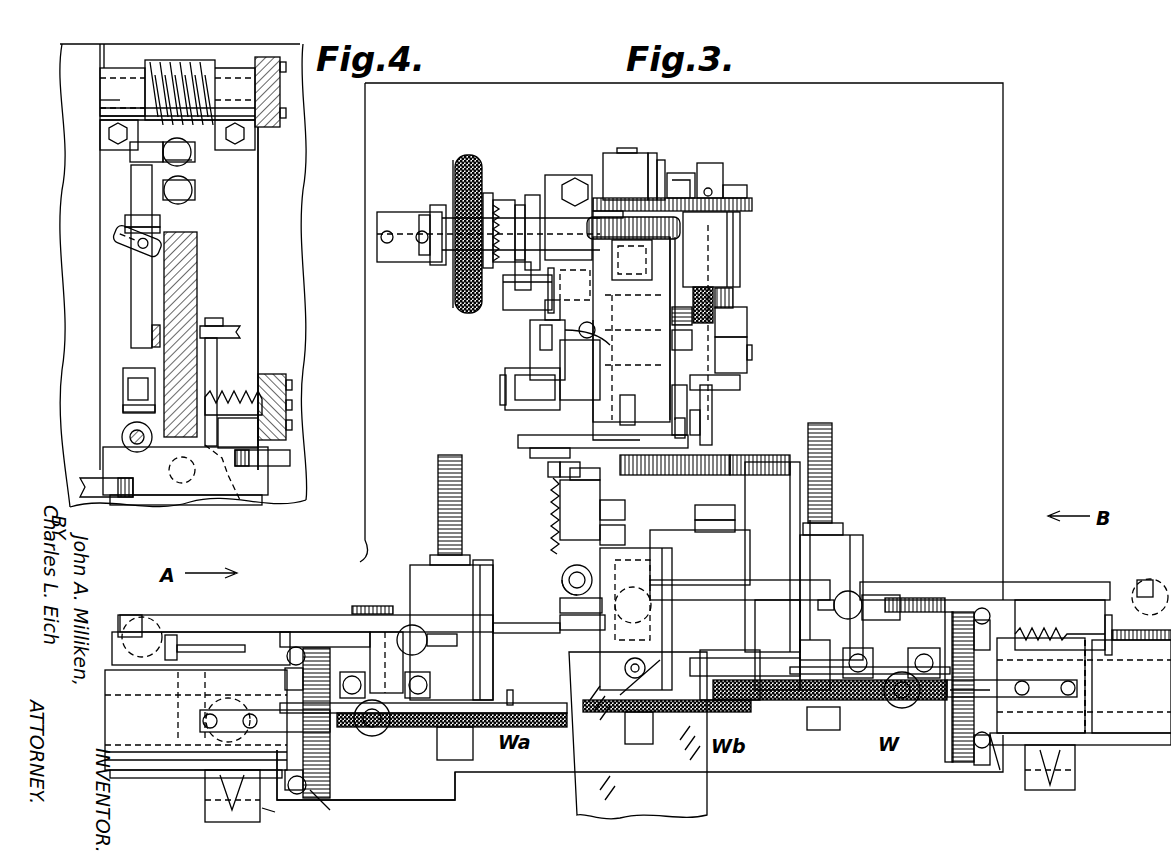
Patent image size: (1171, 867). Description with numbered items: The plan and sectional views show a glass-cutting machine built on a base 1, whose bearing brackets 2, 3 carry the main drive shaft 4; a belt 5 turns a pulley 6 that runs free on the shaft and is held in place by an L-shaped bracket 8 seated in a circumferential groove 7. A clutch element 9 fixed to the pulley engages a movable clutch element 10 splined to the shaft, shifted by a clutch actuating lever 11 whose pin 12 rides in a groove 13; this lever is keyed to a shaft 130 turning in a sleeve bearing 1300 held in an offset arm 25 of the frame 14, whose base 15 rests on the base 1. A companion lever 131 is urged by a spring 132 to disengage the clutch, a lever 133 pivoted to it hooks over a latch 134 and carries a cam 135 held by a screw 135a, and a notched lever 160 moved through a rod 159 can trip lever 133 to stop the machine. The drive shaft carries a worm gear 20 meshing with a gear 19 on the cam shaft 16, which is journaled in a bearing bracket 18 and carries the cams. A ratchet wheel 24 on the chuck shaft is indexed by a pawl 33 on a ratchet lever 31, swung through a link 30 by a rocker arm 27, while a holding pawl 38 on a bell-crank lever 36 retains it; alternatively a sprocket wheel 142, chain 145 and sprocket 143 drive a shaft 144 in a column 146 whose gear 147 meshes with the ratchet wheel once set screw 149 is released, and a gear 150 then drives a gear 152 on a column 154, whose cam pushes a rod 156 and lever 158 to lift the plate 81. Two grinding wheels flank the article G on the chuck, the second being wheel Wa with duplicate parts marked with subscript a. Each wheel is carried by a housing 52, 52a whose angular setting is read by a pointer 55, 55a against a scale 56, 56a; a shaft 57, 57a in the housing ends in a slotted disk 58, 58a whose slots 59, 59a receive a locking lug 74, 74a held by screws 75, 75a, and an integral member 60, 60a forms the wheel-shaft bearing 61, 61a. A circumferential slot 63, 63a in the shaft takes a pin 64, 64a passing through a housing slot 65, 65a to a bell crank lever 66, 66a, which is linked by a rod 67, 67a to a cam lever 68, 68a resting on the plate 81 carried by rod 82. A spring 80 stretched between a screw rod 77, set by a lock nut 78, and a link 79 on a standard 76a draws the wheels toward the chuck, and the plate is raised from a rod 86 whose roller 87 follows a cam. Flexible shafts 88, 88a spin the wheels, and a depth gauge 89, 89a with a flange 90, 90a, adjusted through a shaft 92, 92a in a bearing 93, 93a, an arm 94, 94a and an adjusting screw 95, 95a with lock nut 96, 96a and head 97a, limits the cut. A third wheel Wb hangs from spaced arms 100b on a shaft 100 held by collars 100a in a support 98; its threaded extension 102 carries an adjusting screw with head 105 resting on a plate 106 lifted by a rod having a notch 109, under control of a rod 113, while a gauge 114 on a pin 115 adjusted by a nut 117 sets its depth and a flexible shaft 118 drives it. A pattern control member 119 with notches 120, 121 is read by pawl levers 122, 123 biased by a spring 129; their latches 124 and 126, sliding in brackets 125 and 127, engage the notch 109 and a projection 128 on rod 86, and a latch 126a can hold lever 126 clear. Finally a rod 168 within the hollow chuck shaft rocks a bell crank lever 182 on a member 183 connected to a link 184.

In FIG. 3, the frame 1 is at (990, 100).
In FIG. 4, the nut 2 is at (118, 93).
In FIG. 3, the nut 2 is at (578, 175).
In FIG. 4, the bracket 3 is at (266, 122).
In FIG. 3, the bracket 3 is at (677, 173).
In FIG. 4, the bearing block 4 is at (100, 78).
In FIG. 3, the bearing block 4 is at (560, 175).
In FIG. 3, the grinding wheel 5 is at (466, 155).
In FIG. 3, the wheel face 6 is at (460, 295).
In FIG. 3, the flange 7 is at (440, 205).
In FIG. 3, the shaft support 8 is at (383, 212).
In FIG. 3, the collar 9 is at (490, 193).
In FIG. 3, the ratchet 10 is at (503, 198).
In FIG. 3, the plate 11 is at (540, 305).
In FIG. 3, the block 12 is at (512, 295).
In FIG. 3, the collar 13 is at (532, 195).
In FIG. 4, the plate 14 is at (190, 260).
In FIG. 4, the guide 15 is at (243, 268).
In FIG. 3, the housing 16 is at (625, 153).
In FIG. 3, the plate 18 is at (664, 175).
In FIG. 3, the worm gear 19 is at (680, 228).
In FIG. 4, the worm 20 is at (182, 100).
In FIG. 3, the gear 24 is at (683, 328).
In FIG. 3, the arm 25 is at (500, 400).
In FIG. 3, the rod 27 is at (716, 415).
In FIG. 3, the housing 30 is at (747, 325).
In FIG. 3, the gear 31 is at (684, 340).
In FIG. 3, the cover 33 is at (747, 310).
In FIG. 3, the bracket 36 is at (545, 335).
In FIG. 3, the pin 38 is at (560, 310).
In FIG. 3, the base plate 52 is at (1160, 740).
In FIG. 3, the base plate 52a is at (138, 766).
In FIG. 3, the centering pin 55 is at (1050, 780).
In FIG. 3, the plate 55a is at (196, 759).
In FIG. 3, the sleeve 56 is at (1035, 778).
In FIG. 3, the sleeve 56a is at (279, 814).
In FIG. 3, the arm 57 is at (990, 775).
In FIG. 3, the arm 57a is at (338, 807).
In FIG. 3, the gear 58 is at (950, 687).
In FIG. 3, the gear 58a is at (330, 748).
In FIG. 3, the hub 59 is at (940, 748).
In FIG. 3, the hub 59a is at (326, 700).
In FIG. 3, the shaft 60 is at (930, 685).
In FIG. 3, the bar 60a is at (360, 657).
In FIG. 3, the column 61 is at (855, 555).
In FIG. 3, the column 61a is at (465, 612).
In FIG. 3, the line 63 is at (1090, 740).
In FIG. 3, the cylinder 63a is at (195, 778).
In FIG. 3, the slide 64 is at (1060, 652).
In FIG. 3, the slide 64a is at (185, 695).
In FIG. 3, the slide block 65 is at (1118, 652).
In FIG. 3, the slide block 65a is at (222, 690).
In FIG. 3, the plate 66 is at (1105, 628).
In FIG. 3, the plate 66a is at (130, 652).
In FIG. 3, the block 67 is at (1145, 580).
In FIG. 3, the block 67a is at (130, 598).
In FIG. 4, the bar 68 is at (283, 460).
In FIG. 3, the bar 68 is at (1018, 582).
In FIG. 4, the bar 68a is at (82, 480).
In FIG. 3, the bar 68a is at (558, 628).
In FIG. 3, the hub 74 is at (958, 692).
In FIG. 3, the hub 74a is at (352, 713).
In FIG. 3, the piston 75 is at (1012, 689).
In FIG. 3, the piston 75a is at (265, 721).
In FIG. 3, the pin 76a is at (170, 635).
In FIG. 3, the screw 77 is at (1141, 634).
In FIG. 3, the plate 78 is at (1110, 615).
In FIG. 3, the rod 79 is at (218, 645).
In FIG. 3, the spring 80 is at (1035, 630).
In FIG. 4, the base 81 is at (255, 485).
In FIG. 3, the base 81 is at (560, 608).
In FIG. 4, the hole 82 is at (182, 475).
In FIG. 4, the screw 86 is at (183, 165).
In FIG. 4, the screw 87 is at (195, 150).
In FIG. 3, the feed screw 88 is at (835, 498).
In FIG. 3, the feed screw 88a is at (438, 505).
In FIG. 3, the column 89 is at (790, 650).
In FIG. 3, the bar 89a is at (525, 700).
In FIG. 3, the bar 90 is at (735, 636).
In FIG. 3, the pin 90a is at (560, 680).
In FIG. 3, the rack 92 is at (905, 598).
In FIG. 3, the rack 92a is at (378, 612).
In FIG. 3, the screw 93 is at (905, 645).
In FIG. 3, the screw 93a is at (400, 672).
In FIG. 3, the plate 94 is at (878, 595).
In FIG. 3, the plate 94a is at (392, 630).
In FIG. 3, the stem 95 is at (820, 602).
In FIG. 3, the stem 95a is at (458, 649).
In FIG. 3, the ball 96 is at (843, 594).
In FIG. 3, the ball 96a is at (418, 628).
In FIG. 3, the block 97a is at (425, 612).
In FIG. 3, the plate 98 is at (715, 521).
In FIG. 3, the post 100 is at (765, 495).
In FIG. 3, the arm 100a is at (805, 587).
In FIG. 3, the arm 100b is at (745, 722).
In FIG. 3, the roller 102 is at (570, 572).
In FIG. 3, the cam 105 is at (562, 580).
In FIG. 3, the roller 106 is at (572, 566).
In FIG. 4, the pin 109 is at (130, 437).
In FIG. 4, the screw 113 is at (182, 200).
In FIG. 3, the disc 114 is at (630, 712).
In FIG. 3, the hub 115 is at (626, 664).
In FIG. 3, the pin 117 is at (621, 679).
In FIG. 3, the block 118 is at (725, 560).
In FIG. 3, the spring 119 is at (548, 490).
In FIG. 3, the pawl 120 is at (601, 510).
In FIG. 3, the pin 121 is at (586, 469).
In FIG. 4, the block 122 is at (128, 370).
In FIG. 3, the block 122 is at (560, 530).
In FIG. 4, the pin 123 is at (152, 335).
In FIG. 3, the pin 123 is at (550, 465).
In FIG. 4, the column 124 is at (130, 428).
In FIG. 3, the column 124 is at (636, 619).
In FIG. 4, the plate 125 is at (137, 412).
In FIG. 3, the plate 125 is at (611, 535).
In FIG. 4, the bar 126 is at (140, 188).
In FIG. 4, the handle 126a is at (112, 240).
In FIG. 4, the clamp 127 is at (128, 218).
In FIG. 4, the block 128 is at (132, 156).
In FIG. 3, the pin 129 is at (550, 472).
In FIG. 3, the pin 130 is at (540, 262).
In FIG. 3, the bracket 1300 is at (510, 380).
In FIG. 3, the plate 131 is at (520, 440).
In FIG. 3, the housing 132 is at (605, 372).
In FIG. 3, the pin 133 is at (697, 427).
In FIG. 3, the rod 134 is at (695, 410).
In FIG. 3, the block 135 is at (628, 388).
In FIG. 3, the pin 135a is at (625, 400).
In FIG. 3, the plate 142 is at (655, 160).
In FIG. 3, the rack 143 is at (752, 205).
In FIG. 3, the bracket 144 is at (710, 163).
In FIG. 3, the lug 145 is at (745, 188).
In FIG. 4, the housing 146 is at (283, 95).
In FIG. 3, the housing 146 is at (740, 243).
In FIG. 3, the gear 147 is at (733, 295).
In FIG. 3, the screw 149 is at (712, 190).
In FIG. 3, the rack 150 is at (650, 462).
In FIG. 3, the rack 152 is at (778, 450).
In FIG. 4, the block 154 is at (268, 375).
In FIG. 4, the bracket 156 is at (232, 318).
In FIG. 4, the rod 158 is at (215, 348).
In FIG. 4, the spring 159 is at (228, 430).
In FIG. 3, the spring 159 is at (715, 508).
In FIG. 3, the pin 160 is at (716, 418).
In FIG. 3, the chamber 168 is at (640, 285).
In FIG. 3, the shaft 182 is at (740, 262).
In FIG. 3, the bracket 183 is at (580, 270).
In FIG. 3, the arm 184 is at (740, 385).
In FIG. 3, the glass G is at (585, 792).
In FIG. 3, the wheel Wa is at (452, 736).
In FIG. 3, the wheel Wb is at (830, 701).